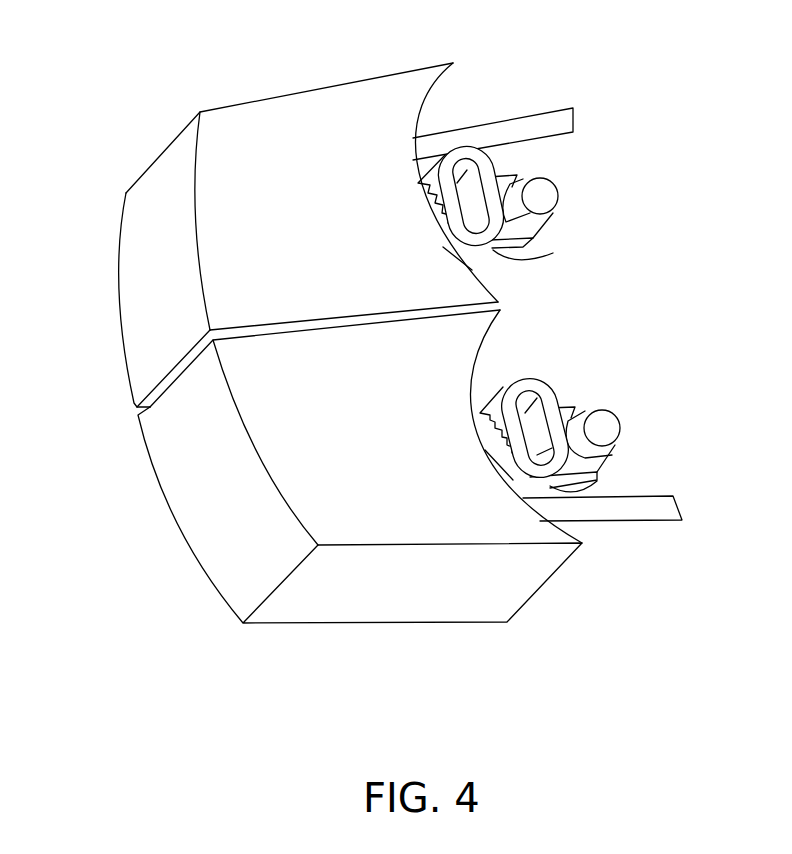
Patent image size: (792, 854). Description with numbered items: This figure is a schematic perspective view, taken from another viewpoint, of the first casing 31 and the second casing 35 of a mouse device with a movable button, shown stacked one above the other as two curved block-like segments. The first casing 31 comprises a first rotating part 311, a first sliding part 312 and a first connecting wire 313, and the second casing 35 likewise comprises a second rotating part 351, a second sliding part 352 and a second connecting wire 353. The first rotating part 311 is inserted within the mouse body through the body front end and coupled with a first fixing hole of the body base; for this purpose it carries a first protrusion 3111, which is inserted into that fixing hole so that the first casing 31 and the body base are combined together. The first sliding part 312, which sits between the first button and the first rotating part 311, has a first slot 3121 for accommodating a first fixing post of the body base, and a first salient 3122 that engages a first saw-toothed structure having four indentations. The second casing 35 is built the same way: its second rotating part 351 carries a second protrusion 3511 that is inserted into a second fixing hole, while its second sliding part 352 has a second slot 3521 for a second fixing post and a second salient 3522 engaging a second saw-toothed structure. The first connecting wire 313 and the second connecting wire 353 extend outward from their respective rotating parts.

The first casing 31 is at (165, 272).
The first rotating part 311 is at (520, 257).
The first protrusion 3111 is at (542, 192).
The first sliding part 312 is at (505, 144).
The first slot 3121 is at (465, 168).
The first salient 3122 is at (427, 203).
The first connecting wire 313 is at (572, 122).
The second casing 35 is at (218, 485).
The second rotating part 351 is at (580, 487).
The second protrusion 3511 is at (605, 427).
The second sliding part 352 is at (542, 524).
The second slot 3521 is at (521, 487).
The second salient 3522 is at (487, 447).
The second connecting wire 353 is at (663, 512).